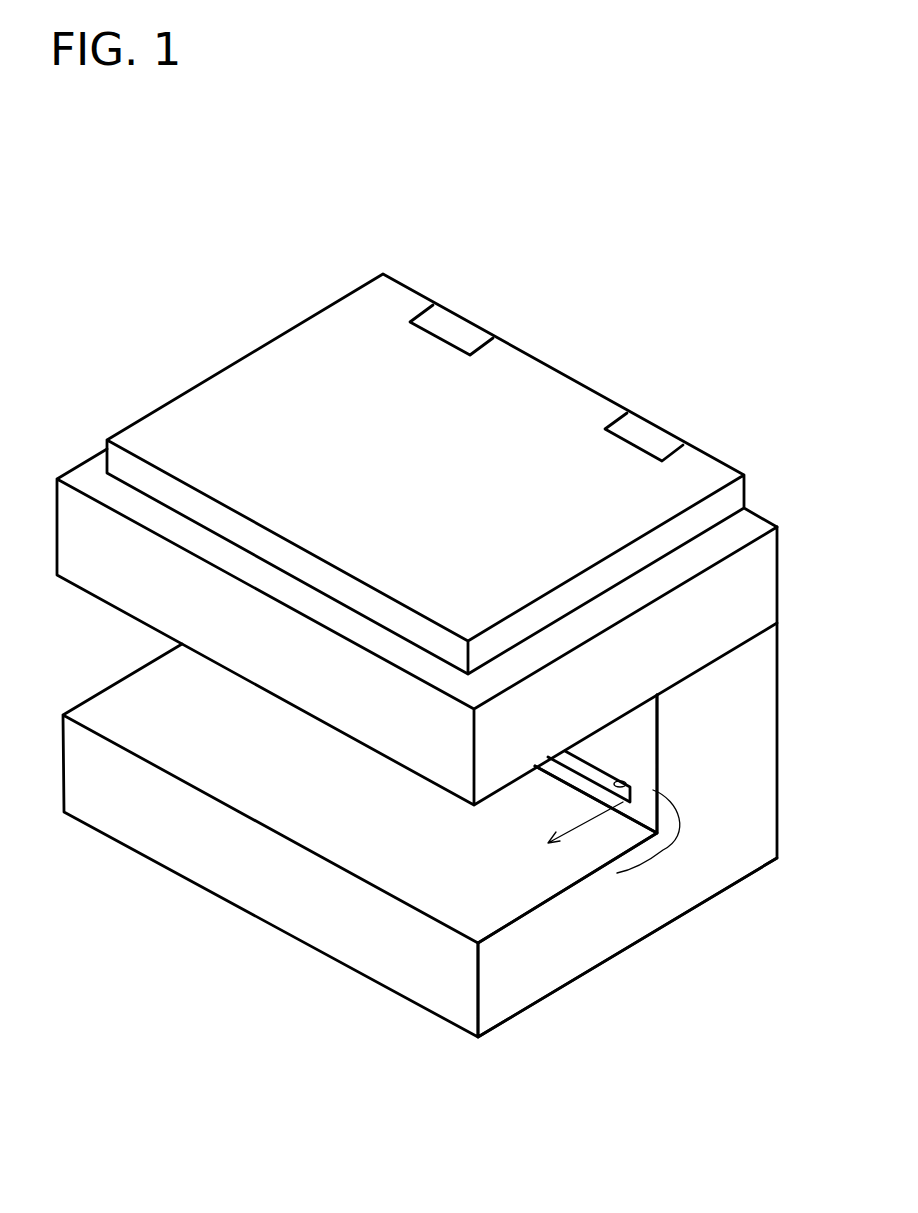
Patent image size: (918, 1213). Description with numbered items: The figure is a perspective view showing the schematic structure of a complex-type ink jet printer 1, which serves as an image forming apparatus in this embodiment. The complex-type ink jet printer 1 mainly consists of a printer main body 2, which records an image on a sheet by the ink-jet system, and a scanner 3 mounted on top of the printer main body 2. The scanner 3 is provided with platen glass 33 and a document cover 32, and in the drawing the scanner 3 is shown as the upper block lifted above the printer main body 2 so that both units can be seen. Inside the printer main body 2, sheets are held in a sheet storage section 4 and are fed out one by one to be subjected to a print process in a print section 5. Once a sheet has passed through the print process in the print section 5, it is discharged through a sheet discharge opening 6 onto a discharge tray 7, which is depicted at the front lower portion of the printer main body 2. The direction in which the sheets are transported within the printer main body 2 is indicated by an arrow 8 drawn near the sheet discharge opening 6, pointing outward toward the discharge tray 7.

The complex-type ink jet printer 1 is at (718, 318).
The printer main body 2 is at (767, 703).
The scanner 3 is at (767, 565).
The sheet storage section 4 is at (542, 980).
The print section 5 is at (767, 667).
The sheet discharge opening 6 is at (632, 792).
The discharge tray 7 is at (570, 870).
The arrow 8 is at (598, 887).
The document cover 32 is at (553, 373).
The platen glass 33 is at (758, 525).